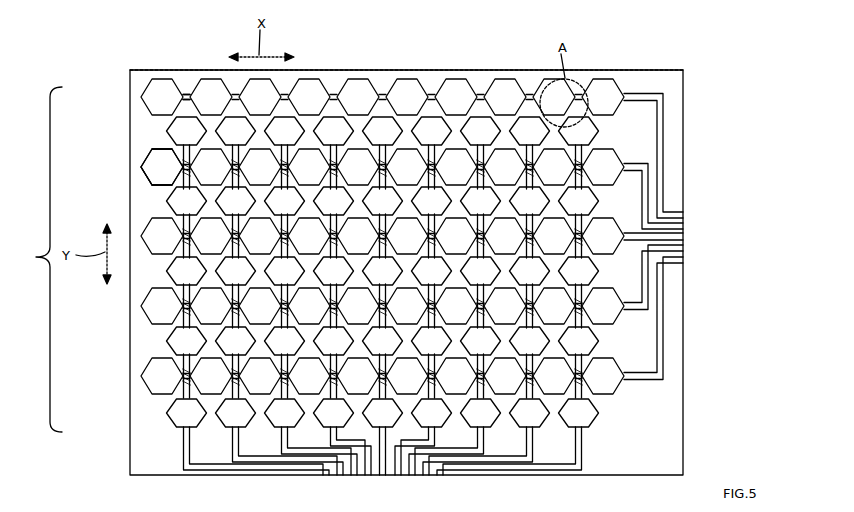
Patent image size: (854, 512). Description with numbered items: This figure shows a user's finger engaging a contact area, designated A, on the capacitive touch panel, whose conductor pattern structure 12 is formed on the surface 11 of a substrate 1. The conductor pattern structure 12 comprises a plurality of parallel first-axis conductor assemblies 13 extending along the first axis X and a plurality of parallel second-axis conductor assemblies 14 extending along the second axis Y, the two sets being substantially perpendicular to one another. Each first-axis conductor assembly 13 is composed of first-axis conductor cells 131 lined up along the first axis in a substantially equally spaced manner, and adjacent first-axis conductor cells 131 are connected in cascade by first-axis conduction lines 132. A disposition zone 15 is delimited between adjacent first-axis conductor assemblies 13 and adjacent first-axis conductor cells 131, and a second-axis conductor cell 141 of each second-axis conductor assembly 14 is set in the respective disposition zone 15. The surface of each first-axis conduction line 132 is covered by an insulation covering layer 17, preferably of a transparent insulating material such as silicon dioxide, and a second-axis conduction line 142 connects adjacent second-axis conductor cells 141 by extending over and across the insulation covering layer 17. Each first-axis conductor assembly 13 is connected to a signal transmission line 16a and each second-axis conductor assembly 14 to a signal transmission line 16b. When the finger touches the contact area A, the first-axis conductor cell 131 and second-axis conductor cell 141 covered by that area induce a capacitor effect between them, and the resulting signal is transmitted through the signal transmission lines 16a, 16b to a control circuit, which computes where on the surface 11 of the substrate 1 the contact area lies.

The substrate 1 is at (684, 101).
The surface 11 is at (674, 131).
The conductor pattern structure 12 is at (37, 259).
The first-axis conductor assembly 13 is at (138, 82).
The first-axis conductor cell 131 is at (180, 94).
The first-axis conduction line 132 is at (187, 93).
The second-axis conductor assembly 14 is at (156, 138).
The second-axis conductor cell 141 is at (183, 152).
The second-axis conduction line 142 is at (180, 163).
The disposition zone 15 is at (158, 123).
The signal transmission line 16a is at (660, 170).
The signal transmission line 16b is at (182, 441).
The insulation covering layer 17 is at (157, 185).